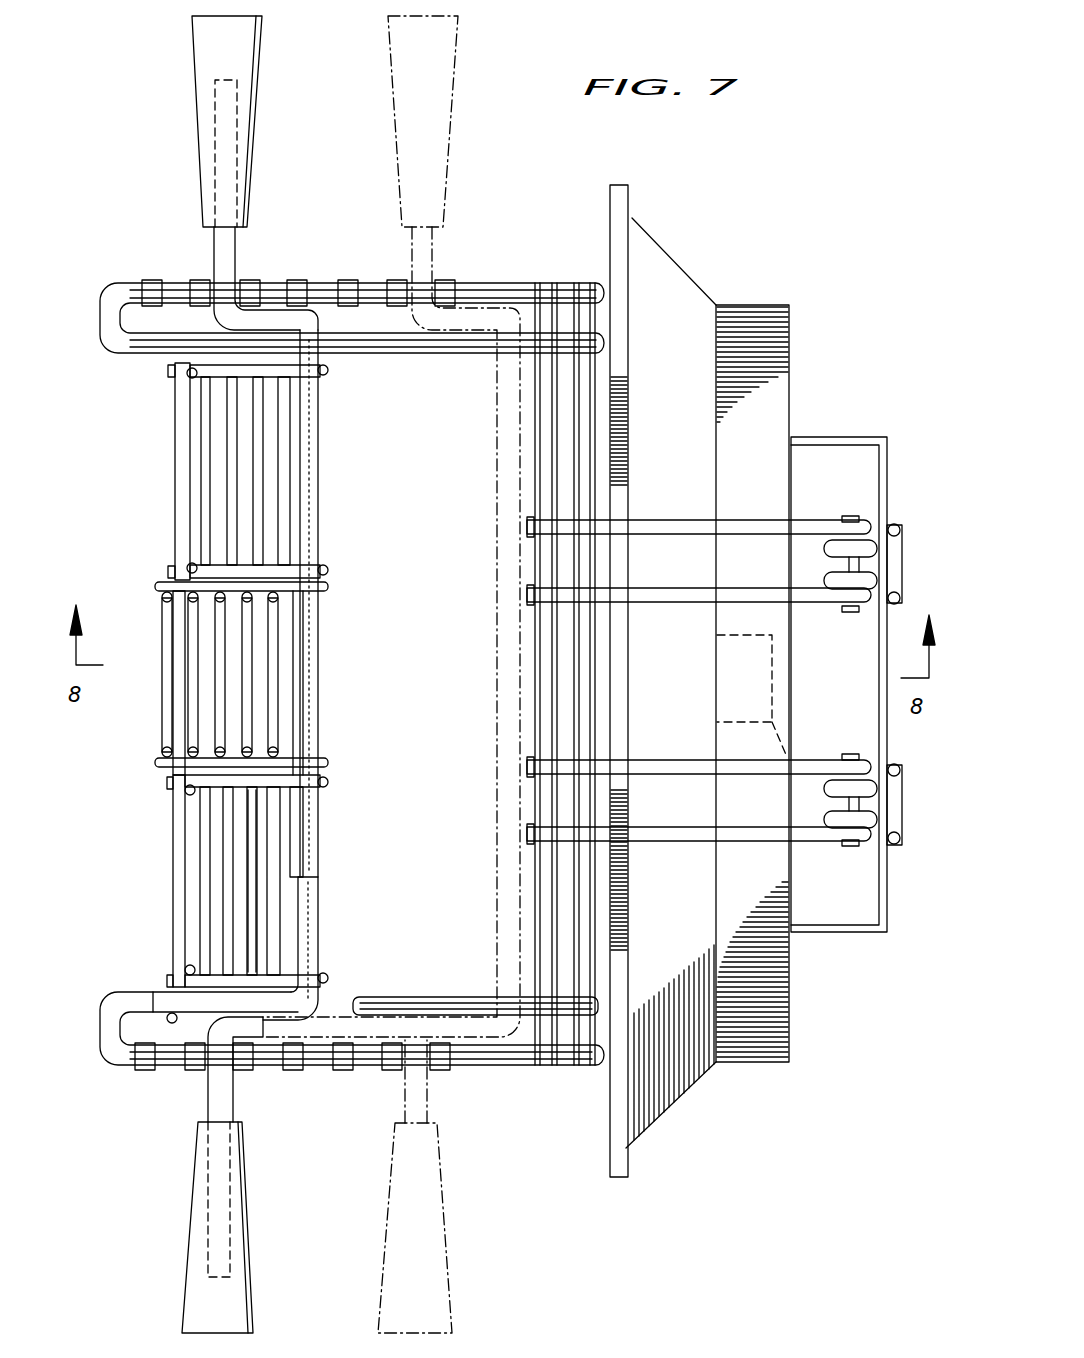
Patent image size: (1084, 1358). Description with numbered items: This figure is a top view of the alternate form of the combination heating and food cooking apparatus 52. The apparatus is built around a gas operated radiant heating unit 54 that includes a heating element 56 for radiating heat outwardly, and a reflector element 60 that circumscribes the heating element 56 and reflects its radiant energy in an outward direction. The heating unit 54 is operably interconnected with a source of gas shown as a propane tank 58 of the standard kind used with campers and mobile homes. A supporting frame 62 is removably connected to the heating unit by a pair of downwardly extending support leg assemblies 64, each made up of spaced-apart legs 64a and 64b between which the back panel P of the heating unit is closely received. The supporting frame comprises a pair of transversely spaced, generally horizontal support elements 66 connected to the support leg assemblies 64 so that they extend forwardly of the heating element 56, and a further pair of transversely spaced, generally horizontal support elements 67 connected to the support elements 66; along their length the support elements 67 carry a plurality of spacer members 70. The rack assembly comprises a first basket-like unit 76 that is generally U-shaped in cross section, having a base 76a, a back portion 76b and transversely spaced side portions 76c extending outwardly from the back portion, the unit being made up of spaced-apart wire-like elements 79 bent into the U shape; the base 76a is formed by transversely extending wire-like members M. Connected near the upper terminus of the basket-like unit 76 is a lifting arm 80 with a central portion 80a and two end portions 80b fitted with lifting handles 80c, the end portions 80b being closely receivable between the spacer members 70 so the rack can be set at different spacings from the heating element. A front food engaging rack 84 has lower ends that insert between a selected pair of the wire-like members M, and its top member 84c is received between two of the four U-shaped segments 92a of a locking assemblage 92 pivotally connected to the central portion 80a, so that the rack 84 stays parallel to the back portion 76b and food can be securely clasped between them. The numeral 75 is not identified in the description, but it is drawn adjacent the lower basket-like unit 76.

The combination heating and food cooking apparatus 52 is at (692, 216).
The radiant heating unit 54 is at (794, 358).
The heating element 56 is at (640, 1112).
The propane tank 58 is at (800, 797).
The reflector element 60 is at (672, 278).
The supporting frame 62 is at (656, 852).
The support leg assemblies 64 is at (932, 567).
The leg 64a is at (884, 610).
The leg 64b is at (838, 541).
The support elements 66 is at (657, 520).
The support elements 67 is at (510, 282).
The spacer members 70 is at (196, 281).
The lower module 75 is at (252, 908).
The first basket-like unit 76 is at (330, 892).
The base 76a is at (262, 843).
The back portion 76b is at (321, 918).
The side portions 76c is at (213, 1002).
The wire-like elements 79 is at (313, 947).
The lifting arm 80 is at (322, 641).
The central portion 80a is at (321, 714).
The end portions 80b is at (238, 250).
The lifting handles 80c is at (260, 100).
The front food engaging rack 84 is at (175, 477).
The top member 84c is at (178, 630).
The locking assemblage 92 is at (165, 668).
The U-shaped segments 92a is at (248, 682).
The wire-like members M is at (228, 450).
The back panel P is at (849, 942).